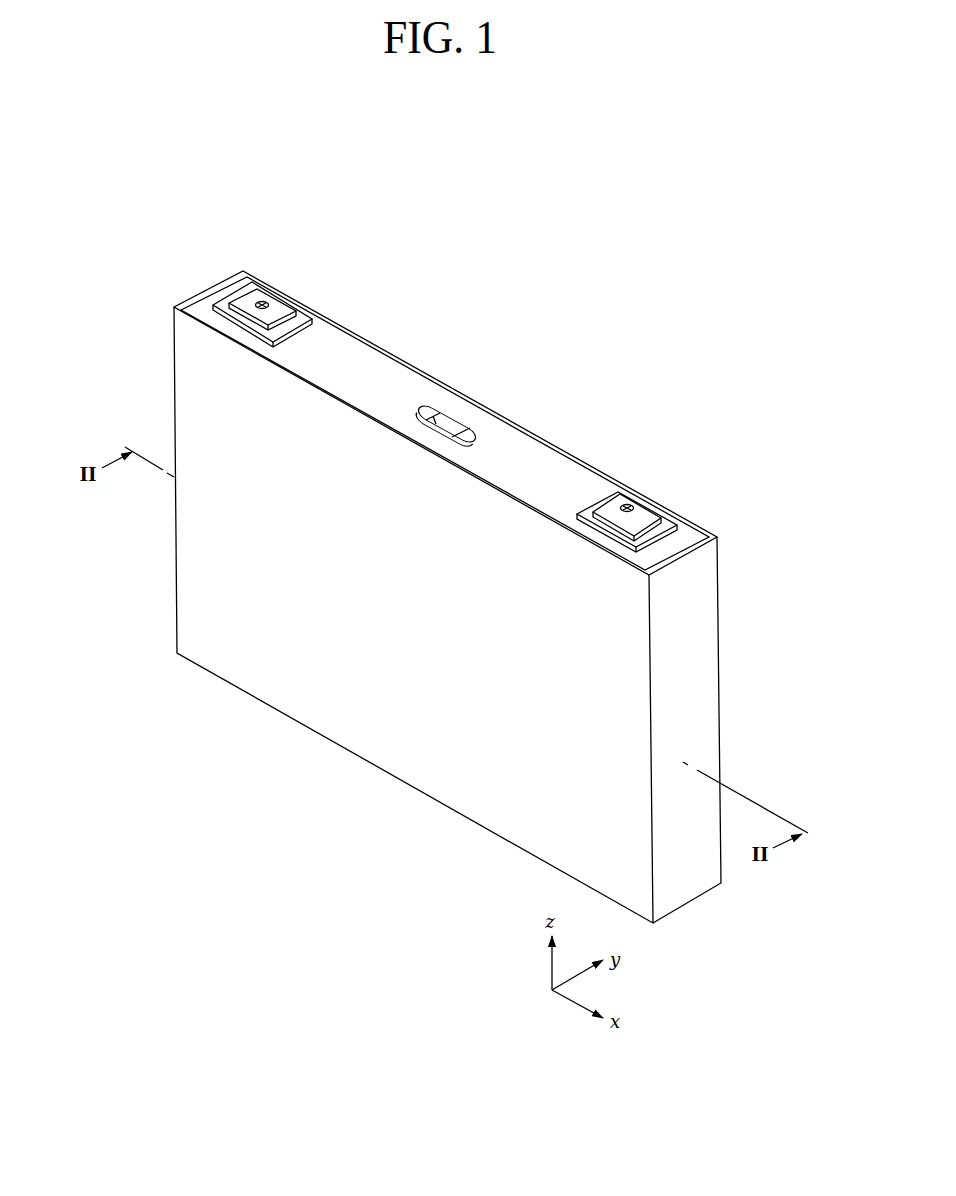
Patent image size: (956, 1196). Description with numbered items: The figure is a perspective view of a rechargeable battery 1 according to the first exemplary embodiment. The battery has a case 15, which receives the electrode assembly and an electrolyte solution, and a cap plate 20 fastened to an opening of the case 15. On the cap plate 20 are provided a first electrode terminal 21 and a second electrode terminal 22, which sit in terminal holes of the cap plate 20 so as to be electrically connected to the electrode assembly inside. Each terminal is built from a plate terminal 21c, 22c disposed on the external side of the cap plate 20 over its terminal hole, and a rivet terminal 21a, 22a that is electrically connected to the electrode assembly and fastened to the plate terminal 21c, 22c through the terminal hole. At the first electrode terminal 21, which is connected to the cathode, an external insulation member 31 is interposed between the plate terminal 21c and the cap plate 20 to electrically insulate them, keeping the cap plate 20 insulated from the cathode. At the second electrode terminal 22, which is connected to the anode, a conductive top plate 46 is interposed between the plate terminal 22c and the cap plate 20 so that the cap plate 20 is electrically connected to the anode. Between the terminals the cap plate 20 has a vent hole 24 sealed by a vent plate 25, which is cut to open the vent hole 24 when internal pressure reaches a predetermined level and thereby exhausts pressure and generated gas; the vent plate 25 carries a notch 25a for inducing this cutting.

The rechargeable battery 1 is at (506, 275).
The case 15 is at (390, 738).
The cap plate 20 is at (358, 358).
The first electrode terminal 21 is at (252, 274).
The rivet terminal 21a is at (263, 302).
The plate terminal 21c is at (283, 307).
The second electrode terminal 22 is at (668, 474).
The rivet terminal 22a is at (625, 503).
The plate terminal 22c is at (643, 513).
The vent hole 24 is at (480, 384).
The vent plate 25 is at (448, 423).
The notch 25a is at (457, 437).
The external insulation member 31 is at (222, 306).
The conductive top plate 46 is at (670, 510).